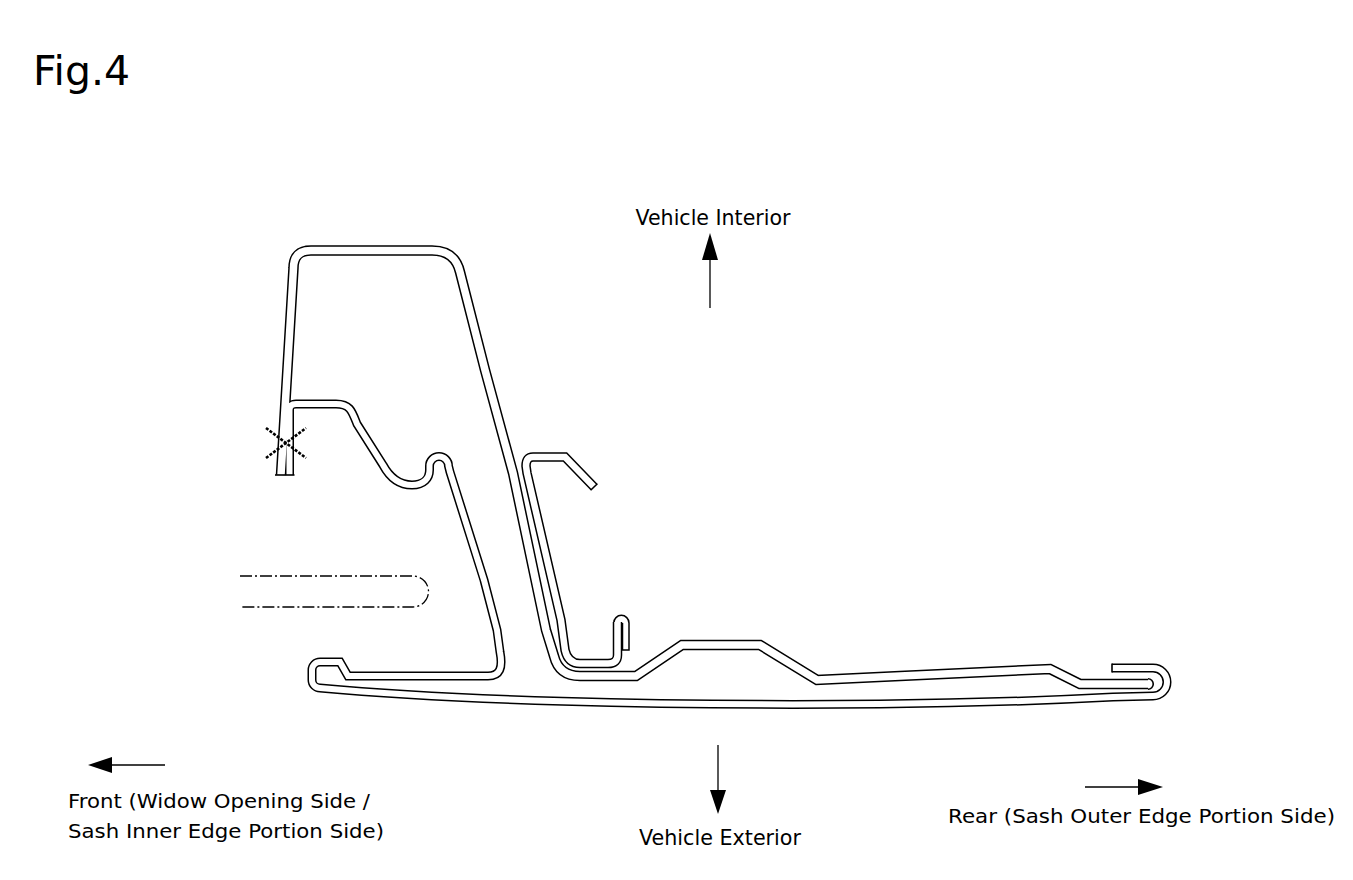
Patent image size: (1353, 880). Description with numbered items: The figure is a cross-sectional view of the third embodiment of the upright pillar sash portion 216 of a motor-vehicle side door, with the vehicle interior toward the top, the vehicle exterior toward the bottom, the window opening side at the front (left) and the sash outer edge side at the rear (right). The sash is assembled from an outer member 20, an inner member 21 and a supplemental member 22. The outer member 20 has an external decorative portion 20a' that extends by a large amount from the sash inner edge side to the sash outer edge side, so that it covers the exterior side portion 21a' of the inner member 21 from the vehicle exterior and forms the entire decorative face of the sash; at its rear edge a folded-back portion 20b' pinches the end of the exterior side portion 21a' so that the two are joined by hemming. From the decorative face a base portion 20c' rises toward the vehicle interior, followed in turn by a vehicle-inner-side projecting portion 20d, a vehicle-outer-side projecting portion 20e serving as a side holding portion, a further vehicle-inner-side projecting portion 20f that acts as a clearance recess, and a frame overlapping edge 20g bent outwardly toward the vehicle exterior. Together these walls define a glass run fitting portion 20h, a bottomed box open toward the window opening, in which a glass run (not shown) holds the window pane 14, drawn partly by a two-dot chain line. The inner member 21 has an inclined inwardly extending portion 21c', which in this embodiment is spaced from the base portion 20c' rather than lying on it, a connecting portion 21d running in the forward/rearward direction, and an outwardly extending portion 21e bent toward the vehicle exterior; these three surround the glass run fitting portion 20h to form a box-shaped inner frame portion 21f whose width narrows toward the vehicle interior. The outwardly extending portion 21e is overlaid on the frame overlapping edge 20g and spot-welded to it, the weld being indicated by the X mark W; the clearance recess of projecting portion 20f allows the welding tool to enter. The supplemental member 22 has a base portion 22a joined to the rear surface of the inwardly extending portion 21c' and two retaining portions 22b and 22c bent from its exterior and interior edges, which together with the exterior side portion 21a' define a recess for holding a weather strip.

The window pane 14 is at (275, 600).
The outer member 20 is at (719, 553).
The external decorative portion 20a' is at (735, 727).
The folded-back portion 20b' is at (1179, 680).
The base portion 20c' is at (456, 574).
The vehicle-inner-side projecting portion 20d is at (438, 452).
The vehicle-outer-side projecting portion 20e is at (413, 491).
The vehicle-inner-side projecting portion 20f is at (328, 400).
The frame overlapping edge 20g is at (296, 456).
The glass run fitting portion 20h is at (328, 562).
The inner member 21 is at (667, 429).
The exterior side portion 21a' is at (864, 645).
The inwardly extending portion 21c' is at (521, 474).
The connecting portion 21d is at (393, 252).
The outwardly extending portion 21e is at (282, 355).
The inner frame portion 21f is at (470, 252).
The supplemental member 22 is at (611, 547).
The base portion 22a is at (547, 547).
The retaining portion 22b is at (632, 624).
The retaining portion 22c is at (598, 488).
The upright pillar sash portion 216 is at (988, 424).
The spot-welded part mark W is at (280, 437).